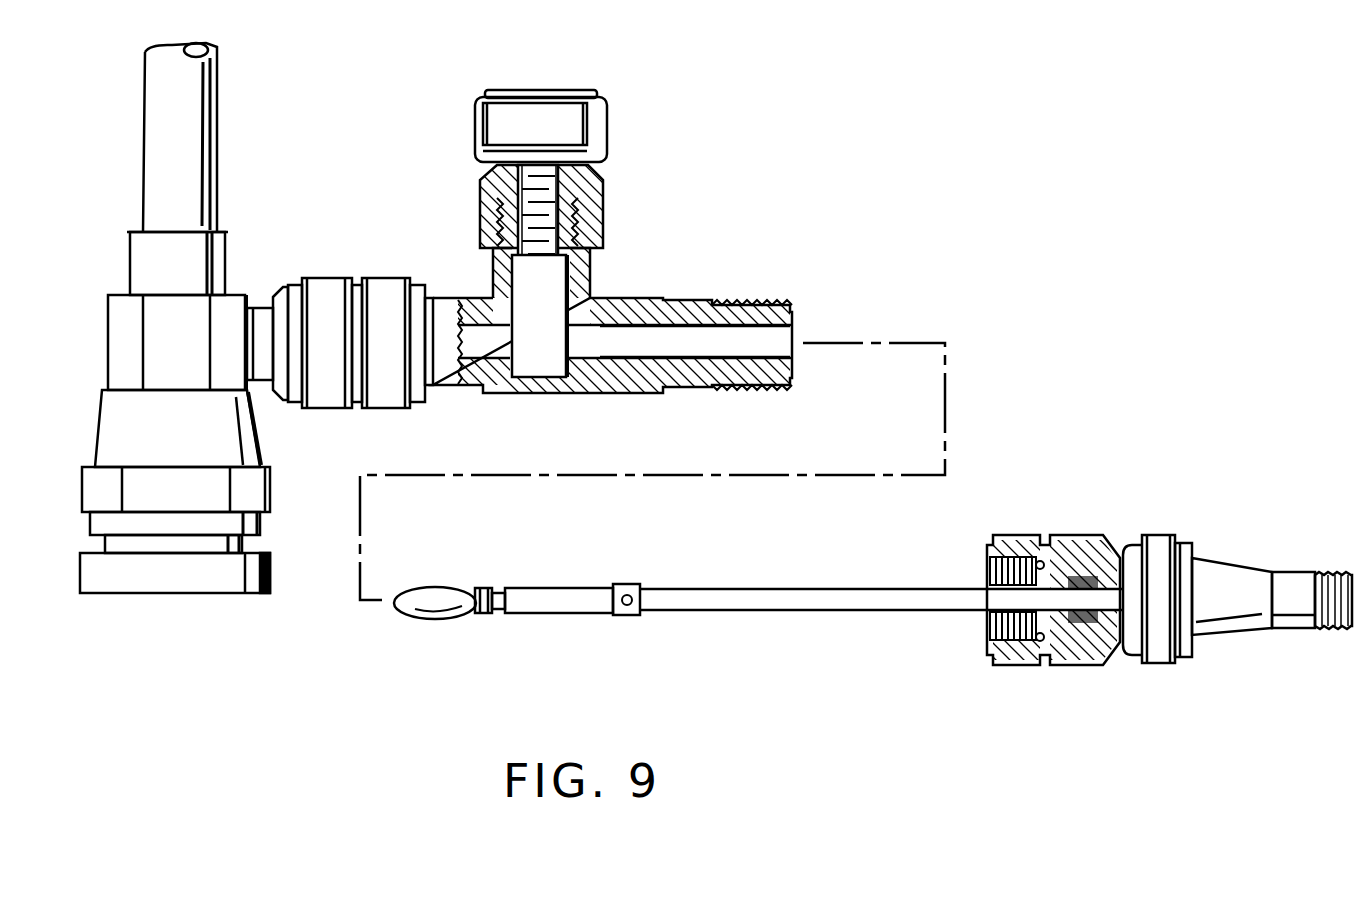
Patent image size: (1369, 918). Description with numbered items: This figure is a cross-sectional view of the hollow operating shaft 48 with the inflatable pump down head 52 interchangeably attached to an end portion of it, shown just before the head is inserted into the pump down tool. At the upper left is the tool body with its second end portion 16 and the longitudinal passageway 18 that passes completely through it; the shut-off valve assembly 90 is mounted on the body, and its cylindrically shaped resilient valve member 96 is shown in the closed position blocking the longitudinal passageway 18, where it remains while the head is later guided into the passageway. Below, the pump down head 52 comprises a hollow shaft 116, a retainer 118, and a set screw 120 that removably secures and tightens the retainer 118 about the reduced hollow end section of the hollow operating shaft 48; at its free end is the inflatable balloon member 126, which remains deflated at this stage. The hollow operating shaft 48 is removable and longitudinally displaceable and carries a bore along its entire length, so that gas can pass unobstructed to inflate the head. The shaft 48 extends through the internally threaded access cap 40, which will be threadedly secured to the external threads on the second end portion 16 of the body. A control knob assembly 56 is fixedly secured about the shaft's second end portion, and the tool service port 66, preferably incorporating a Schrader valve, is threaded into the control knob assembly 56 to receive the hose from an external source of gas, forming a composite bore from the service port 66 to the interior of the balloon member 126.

The shut-off valve assembly 90 is at (642, 169).
The resilient valve member 96 is at (517, 338).
The second end portion 16 is at (746, 308).
The longitudinal passageway 18 is at (645, 342).
The pump down head 52 is at (497, 633).
The inflatable balloon member 126 is at (432, 604).
The hollow shaft 116 is at (557, 598).
The retainer 118 is at (628, 592).
The set screw 120 is at (627, 614).
The hollow operating shaft 48 is at (770, 596).
The access cap 40 is at (1080, 553).
The control knob assembly 56 is at (1156, 553).
The tool service port 66 is at (1230, 595).